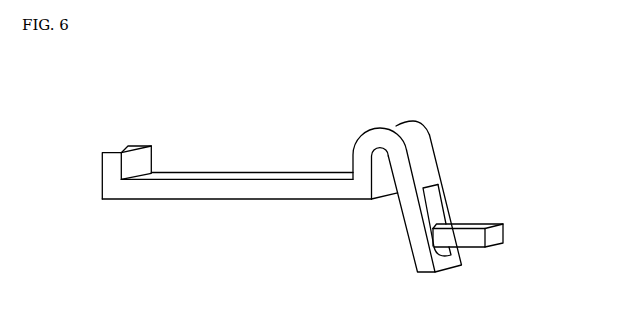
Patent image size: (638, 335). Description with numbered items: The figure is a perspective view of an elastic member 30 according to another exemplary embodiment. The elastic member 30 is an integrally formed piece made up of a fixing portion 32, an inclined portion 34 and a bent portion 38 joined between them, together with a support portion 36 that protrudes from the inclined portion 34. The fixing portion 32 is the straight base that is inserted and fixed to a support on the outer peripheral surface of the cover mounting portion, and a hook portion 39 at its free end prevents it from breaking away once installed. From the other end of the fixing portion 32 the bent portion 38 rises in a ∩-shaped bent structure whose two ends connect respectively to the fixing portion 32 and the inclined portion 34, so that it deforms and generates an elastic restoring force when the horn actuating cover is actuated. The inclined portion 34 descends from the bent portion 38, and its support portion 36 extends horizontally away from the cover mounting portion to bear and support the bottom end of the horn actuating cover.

The elastic member 30 is at (307, 167).
The fixing portion 32 is at (239, 178).
The inclined portion 34 is at (439, 166).
The support portion 36 is at (477, 230).
The bent portion 38 is at (420, 131).
The hook portion 39 is at (111, 162).